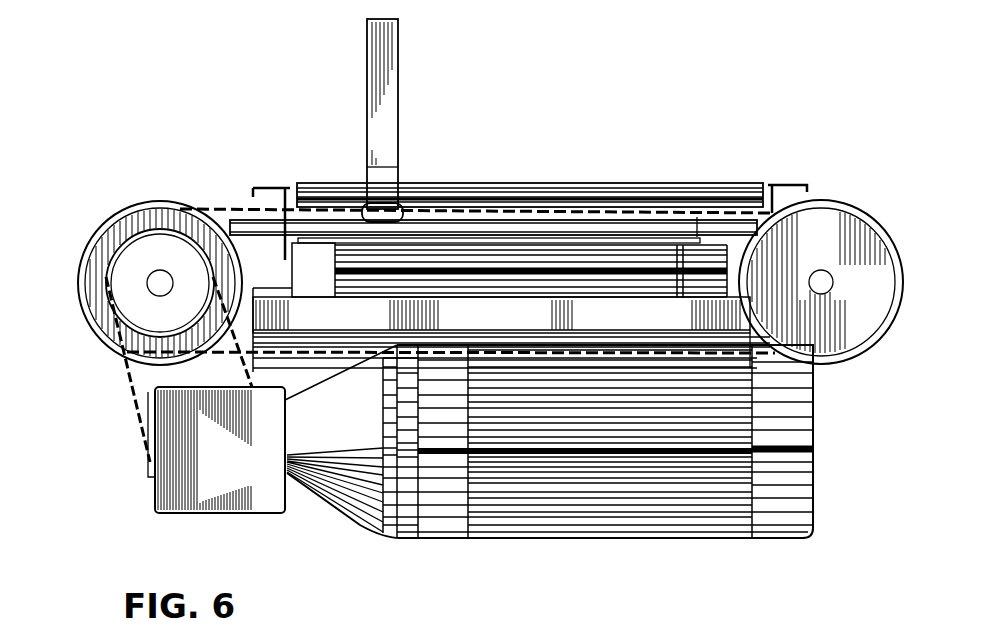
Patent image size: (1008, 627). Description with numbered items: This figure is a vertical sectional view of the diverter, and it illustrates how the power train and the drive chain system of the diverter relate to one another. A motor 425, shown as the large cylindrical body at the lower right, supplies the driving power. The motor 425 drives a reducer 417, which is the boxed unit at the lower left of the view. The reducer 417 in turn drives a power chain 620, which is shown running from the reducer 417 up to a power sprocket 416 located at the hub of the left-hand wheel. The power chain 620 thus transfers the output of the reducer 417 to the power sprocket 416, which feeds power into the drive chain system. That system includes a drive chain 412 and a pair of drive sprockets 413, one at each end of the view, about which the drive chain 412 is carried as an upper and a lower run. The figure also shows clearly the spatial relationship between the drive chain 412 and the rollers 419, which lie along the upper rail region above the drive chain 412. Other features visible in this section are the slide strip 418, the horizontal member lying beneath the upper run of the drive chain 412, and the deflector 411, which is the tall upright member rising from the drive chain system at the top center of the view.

The deflector 411 is at (400, 68).
The drive chain 412 is at (230, 208).
The drive sprockets 413 is at (132, 205).
The power sprocket 416 is at (108, 280).
The reducer 417 is at (285, 512).
The slide strip 418 is at (275, 228).
The rollers 419 is at (608, 182).
The motor 425 is at (522, 540).
The power chain 620 is at (152, 388).